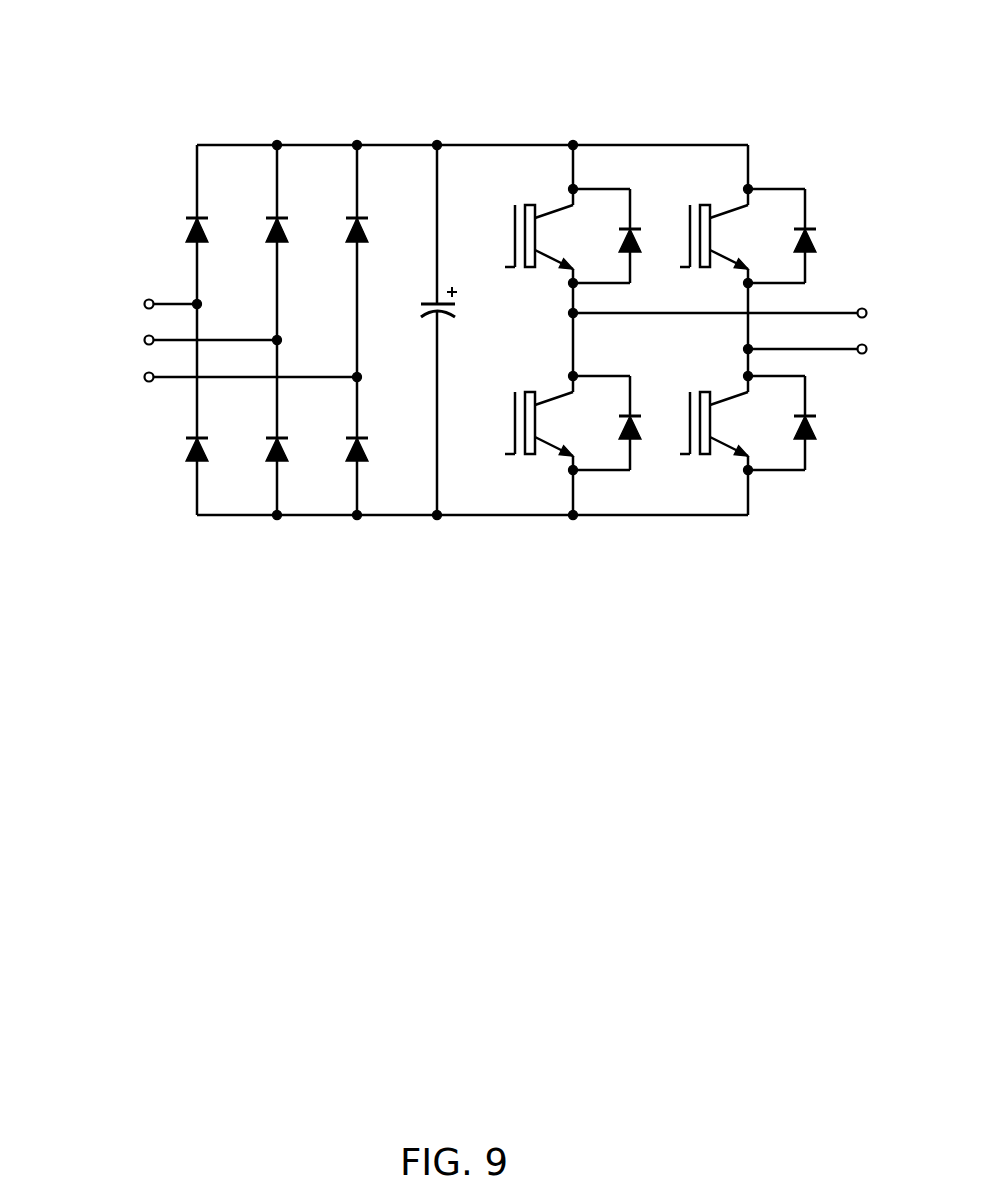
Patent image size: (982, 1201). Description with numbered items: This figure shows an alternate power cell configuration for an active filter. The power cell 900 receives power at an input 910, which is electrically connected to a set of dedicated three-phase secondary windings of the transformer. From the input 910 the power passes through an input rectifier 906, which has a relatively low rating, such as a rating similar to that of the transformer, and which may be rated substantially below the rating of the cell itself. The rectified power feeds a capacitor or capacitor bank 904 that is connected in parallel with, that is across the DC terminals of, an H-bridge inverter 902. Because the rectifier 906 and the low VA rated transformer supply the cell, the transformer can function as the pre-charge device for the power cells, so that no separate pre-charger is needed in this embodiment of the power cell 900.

The power cell 900 is at (190, 54).
The H-bridge inverter 902 is at (822, 600).
The capacitor or capacitor bank 904 is at (437, 538).
The input rectifier 906 is at (373, 602).
The input 910 is at (115, 273).